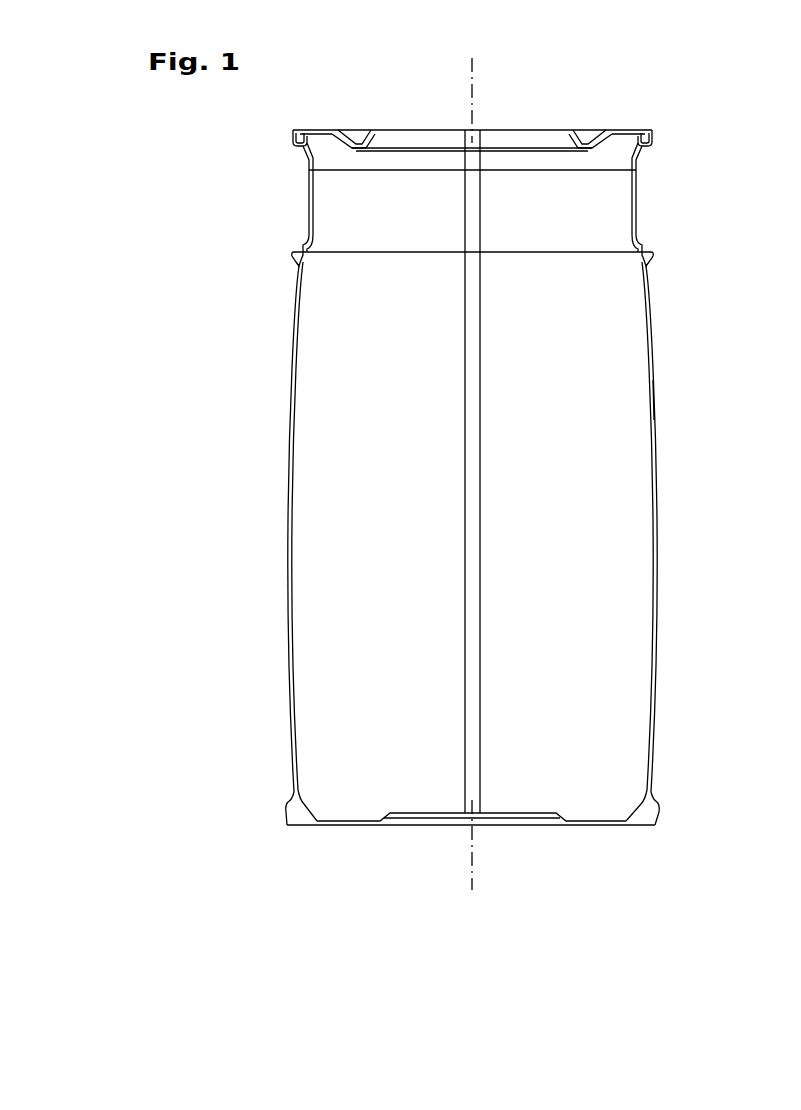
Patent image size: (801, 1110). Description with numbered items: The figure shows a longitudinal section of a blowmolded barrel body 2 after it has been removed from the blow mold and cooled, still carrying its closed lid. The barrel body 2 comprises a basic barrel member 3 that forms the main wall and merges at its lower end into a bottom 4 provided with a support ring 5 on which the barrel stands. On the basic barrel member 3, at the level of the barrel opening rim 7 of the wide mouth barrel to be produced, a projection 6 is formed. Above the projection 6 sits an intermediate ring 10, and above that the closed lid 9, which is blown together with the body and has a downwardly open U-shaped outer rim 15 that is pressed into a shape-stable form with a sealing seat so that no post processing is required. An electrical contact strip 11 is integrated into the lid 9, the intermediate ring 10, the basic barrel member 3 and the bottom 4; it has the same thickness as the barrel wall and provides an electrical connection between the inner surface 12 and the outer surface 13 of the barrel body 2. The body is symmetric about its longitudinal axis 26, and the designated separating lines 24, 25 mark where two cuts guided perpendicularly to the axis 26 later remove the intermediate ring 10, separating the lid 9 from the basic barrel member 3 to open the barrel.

The barrel body 2 is at (665, 508).
The basic barrel member 3 is at (290, 470).
The bottom 4 is at (429, 815).
The support ring 5 is at (289, 823).
The projection 6 is at (293, 258).
The barrel opening rim 7 is at (300, 240).
The closed lid 9 is at (437, 130).
The intermediate ring 10 is at (308, 200).
The electrical contact strip 11 is at (466, 343).
The inner surface 12 is at (652, 400).
The outer surface 13 is at (657, 417).
The U-shaped outer rim 15 is at (647, 130).
The separating line 24 is at (523, 170).
The separating line 25 is at (517, 255).
The longitudinal axis 26 is at (471, 474).